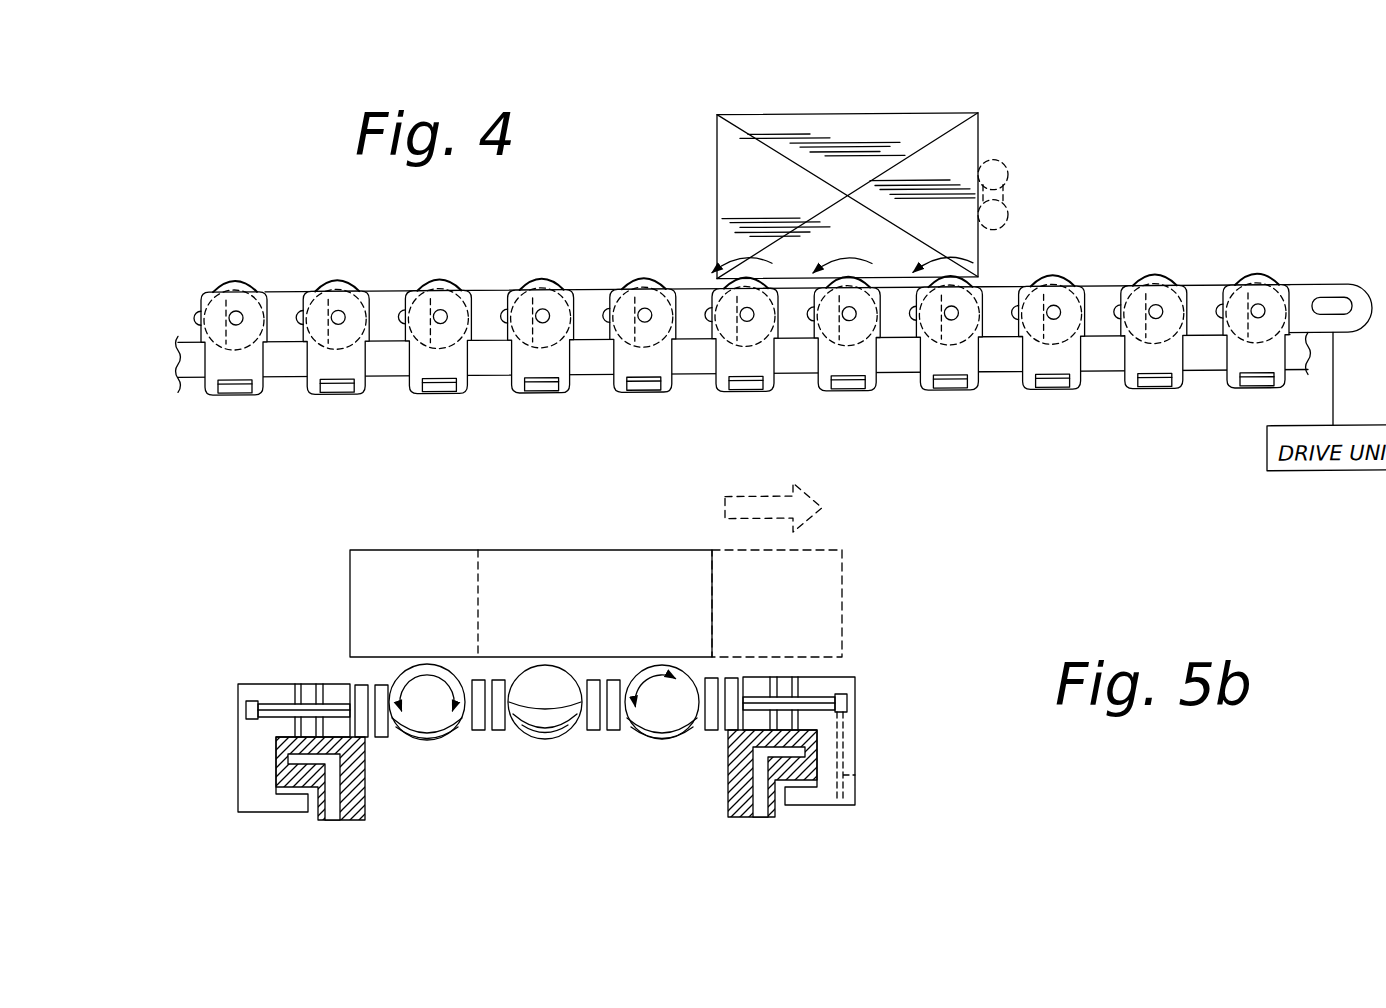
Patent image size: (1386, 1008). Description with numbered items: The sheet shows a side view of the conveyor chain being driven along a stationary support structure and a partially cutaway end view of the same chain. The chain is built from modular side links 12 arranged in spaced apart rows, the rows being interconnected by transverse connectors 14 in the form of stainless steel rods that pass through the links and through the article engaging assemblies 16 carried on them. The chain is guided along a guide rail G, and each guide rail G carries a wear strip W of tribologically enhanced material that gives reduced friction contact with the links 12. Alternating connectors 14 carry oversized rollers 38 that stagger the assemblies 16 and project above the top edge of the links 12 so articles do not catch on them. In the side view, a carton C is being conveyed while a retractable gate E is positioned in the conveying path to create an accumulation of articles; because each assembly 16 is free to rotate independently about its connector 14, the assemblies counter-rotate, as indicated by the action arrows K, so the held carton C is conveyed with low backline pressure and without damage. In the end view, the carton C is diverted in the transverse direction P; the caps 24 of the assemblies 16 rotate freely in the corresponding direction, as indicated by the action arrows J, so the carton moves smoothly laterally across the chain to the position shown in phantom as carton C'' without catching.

In FIG. 4, the side link 12 is at (253, 360).
In FIG. 5B, the side link 12 is at (275, 652).
In FIG. 5B, the transverse connector 14 is at (232, 714).
In FIG. 4, the article engaging assembly 16 is at (1255, 270).
In FIG. 5B, the article engaging assembly 16 is at (567, 752).
In FIG. 4, the cap 24 is at (1133, 287).
In FIG. 4, the roller 38 is at (357, 297).
In FIG. 4, the carton C is at (847, 155).
In FIG. 5B, the carton C is at (531, 603).
In FIG. 5B, the carton C'' is at (827, 603).
In FIG. 4, the retractable gate E is at (1010, 224).
In FIG. 4, the guide rail G is at (490, 367).
In FIG. 5B, the guide rail G is at (352, 822).
In FIG. 4, the action arrows K is at (945, 255).
In FIG. 4, the transverse direction P is at (768, 500).
In FIG. 5B, the action arrows J is at (400, 737).
In FIG. 5B, the wear strip W is at (370, 803).